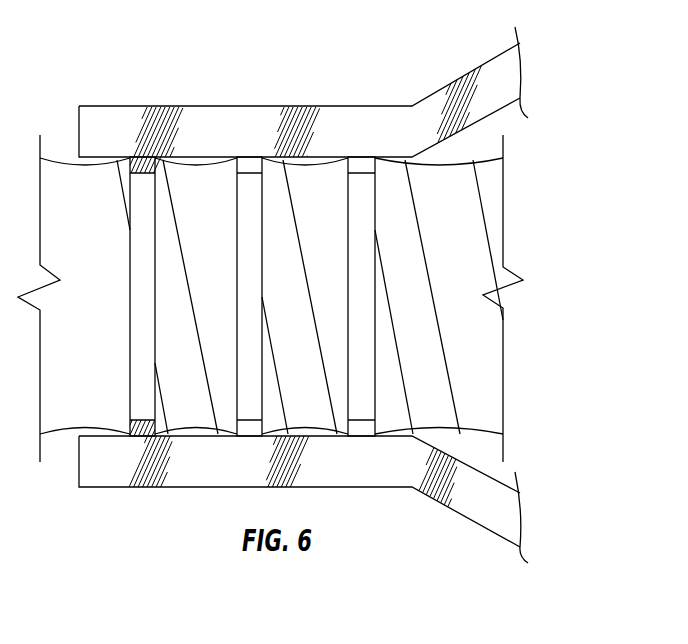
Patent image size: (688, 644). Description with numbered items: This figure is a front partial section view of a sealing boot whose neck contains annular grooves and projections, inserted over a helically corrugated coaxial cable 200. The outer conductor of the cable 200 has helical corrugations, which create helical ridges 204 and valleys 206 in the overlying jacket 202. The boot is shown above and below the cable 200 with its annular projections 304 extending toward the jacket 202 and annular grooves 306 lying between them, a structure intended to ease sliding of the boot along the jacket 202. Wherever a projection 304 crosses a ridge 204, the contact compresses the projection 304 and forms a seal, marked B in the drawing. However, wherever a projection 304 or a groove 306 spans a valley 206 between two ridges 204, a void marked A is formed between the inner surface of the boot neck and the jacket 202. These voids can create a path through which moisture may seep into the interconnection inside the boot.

The cable 200 is at (520, 297).
The jacket 202 is at (487, 190).
The helical ridges 204 is at (433, 405).
The valleys 206 is at (478, 357).
The projection 304 is at (360, 165).
The groove 306 is at (208, 158).